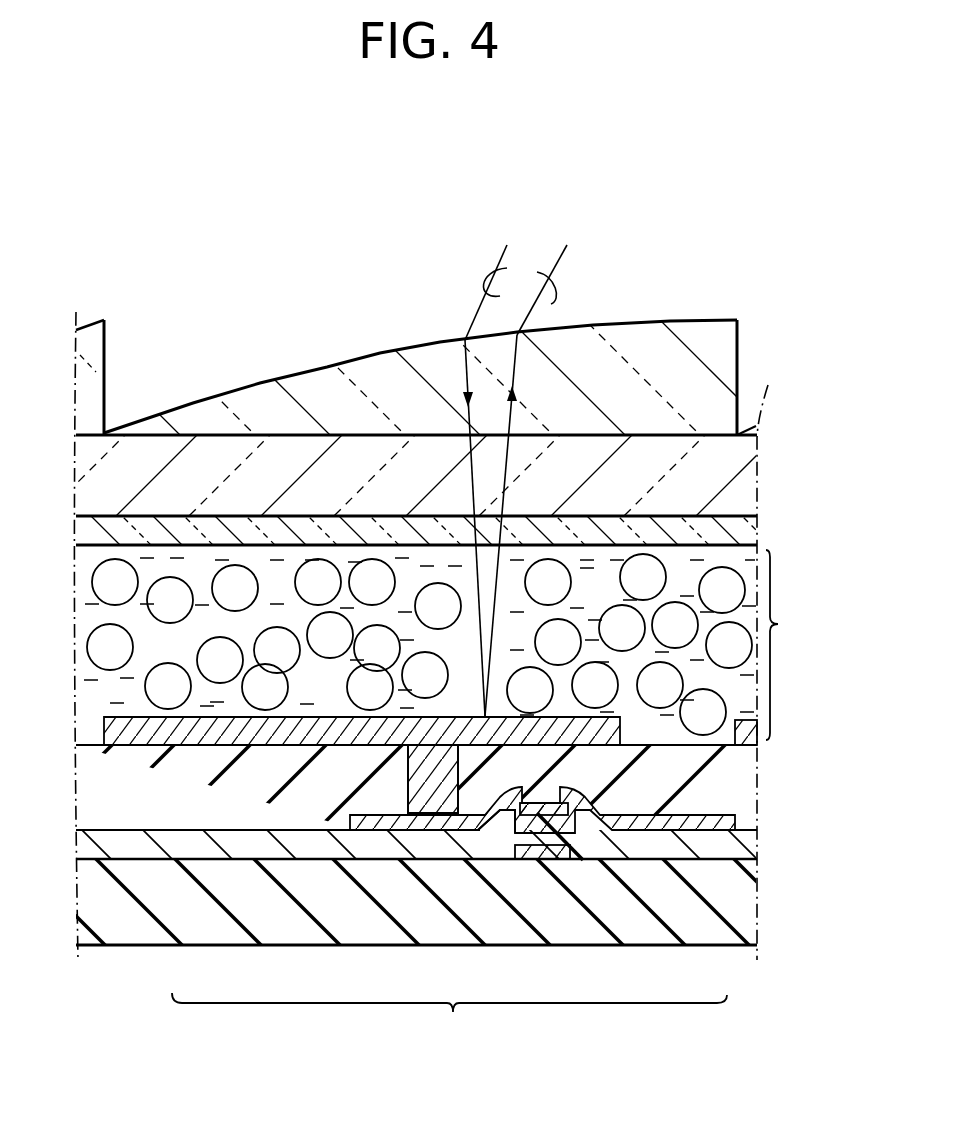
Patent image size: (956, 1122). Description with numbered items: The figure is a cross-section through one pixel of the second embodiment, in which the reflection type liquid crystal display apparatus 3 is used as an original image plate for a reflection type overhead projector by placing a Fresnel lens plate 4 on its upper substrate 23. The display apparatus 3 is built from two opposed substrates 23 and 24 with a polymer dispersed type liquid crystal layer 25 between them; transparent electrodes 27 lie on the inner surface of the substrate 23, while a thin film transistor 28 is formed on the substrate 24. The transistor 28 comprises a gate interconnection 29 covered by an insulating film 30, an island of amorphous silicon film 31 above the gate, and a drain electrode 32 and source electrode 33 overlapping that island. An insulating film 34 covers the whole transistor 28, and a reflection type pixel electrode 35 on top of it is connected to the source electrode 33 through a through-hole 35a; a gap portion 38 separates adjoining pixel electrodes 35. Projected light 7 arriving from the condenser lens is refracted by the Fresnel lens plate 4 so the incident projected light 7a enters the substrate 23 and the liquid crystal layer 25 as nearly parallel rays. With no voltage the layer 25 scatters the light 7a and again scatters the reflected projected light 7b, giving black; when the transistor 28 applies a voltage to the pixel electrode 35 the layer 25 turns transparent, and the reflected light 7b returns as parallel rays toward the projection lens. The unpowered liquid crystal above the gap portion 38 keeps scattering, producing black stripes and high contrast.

The reflection type liquid crystal display apparatus 3 is at (774, 746).
The Fresnel lens plate 4 is at (337, 378).
The projected light 7 is at (530, 292).
The projected light 7a is at (460, 393).
The reflected projected light 7b is at (515, 385).
The substrate 23 is at (752, 494).
The transparent electrodes 27 is at (752, 534).
The polymer dispersed type liquid crystal layer 25 is at (455, 645).
The reflection type pixel electrode 35 is at (750, 746).
The through-hole 35a is at (406, 768).
The gap portion 38 is at (732, 814).
The source electrode 33 is at (362, 830).
The amorphous silicon film 31 is at (503, 838).
The gate interconnection 29 is at (547, 848).
The insulating film 30 is at (602, 853).
The drain electrode 32 is at (662, 822).
The insulating film 34 is at (738, 835).
The substrate 24 is at (728, 908).
The thin film transistor 28 is at (449, 1026).